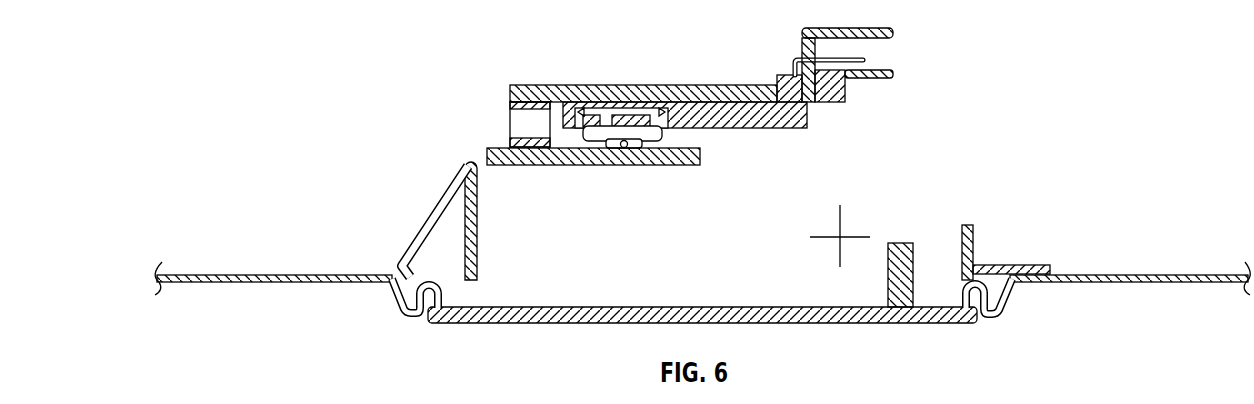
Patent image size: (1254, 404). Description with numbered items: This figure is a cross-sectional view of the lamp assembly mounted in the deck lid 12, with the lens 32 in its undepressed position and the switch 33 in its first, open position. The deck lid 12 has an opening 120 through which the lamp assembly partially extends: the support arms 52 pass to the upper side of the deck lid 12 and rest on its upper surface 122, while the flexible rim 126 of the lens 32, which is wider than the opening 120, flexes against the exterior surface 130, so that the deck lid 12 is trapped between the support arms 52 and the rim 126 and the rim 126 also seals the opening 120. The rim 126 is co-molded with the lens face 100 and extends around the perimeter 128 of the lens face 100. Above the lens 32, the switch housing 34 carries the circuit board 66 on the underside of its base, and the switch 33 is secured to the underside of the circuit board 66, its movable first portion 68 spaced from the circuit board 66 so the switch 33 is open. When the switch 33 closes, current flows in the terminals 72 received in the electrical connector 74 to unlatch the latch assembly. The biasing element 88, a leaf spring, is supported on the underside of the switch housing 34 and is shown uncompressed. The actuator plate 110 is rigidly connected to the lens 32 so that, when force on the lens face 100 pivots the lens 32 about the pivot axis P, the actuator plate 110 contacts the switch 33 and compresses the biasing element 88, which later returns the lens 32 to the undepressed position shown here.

The deck lid 12 is at (240, 283).
The lens 32 is at (480, 324).
The switch 33 is at (701, 155).
The switch housing 34 is at (558, 85).
The support arms 52 is at (1012, 265).
The circuit board 66 is at (766, 129).
The first portion 68 is at (653, 88).
The terminals 72 is at (790, 62).
The electrical connector 74 is at (842, 28).
The biasing element 88 is at (510, 124).
The lens face 100 is at (783, 324).
The actuator plate 110 is at (560, 166).
The opening 120 is at (414, 276).
The upper surface 122 is at (1105, 274).
The rim 126 is at (394, 300).
The perimeter 128 is at (990, 318).
The exterior surface 130 is at (342, 283).
The pivot axis P is at (840, 237).